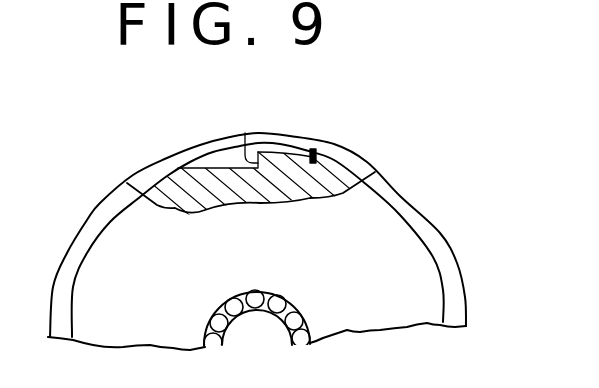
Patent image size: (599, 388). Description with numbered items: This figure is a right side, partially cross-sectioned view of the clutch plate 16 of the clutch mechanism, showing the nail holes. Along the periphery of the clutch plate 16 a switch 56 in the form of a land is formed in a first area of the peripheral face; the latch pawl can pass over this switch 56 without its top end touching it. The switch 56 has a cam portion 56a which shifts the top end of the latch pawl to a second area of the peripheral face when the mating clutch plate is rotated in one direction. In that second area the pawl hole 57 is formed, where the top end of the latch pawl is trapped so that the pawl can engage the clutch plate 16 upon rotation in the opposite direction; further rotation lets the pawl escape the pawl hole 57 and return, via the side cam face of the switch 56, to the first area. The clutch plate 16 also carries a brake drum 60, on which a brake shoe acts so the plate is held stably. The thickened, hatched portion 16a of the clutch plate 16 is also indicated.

The clutch plate 16 is at (100, 204).
The thickened portion of housing 16a is at (160, 186).
The switch 56 is at (213, 150).
The cam portion 56a is at (298, 152).
The pawl hole 57 is at (245, 133).
The brake drum 60 is at (390, 208).